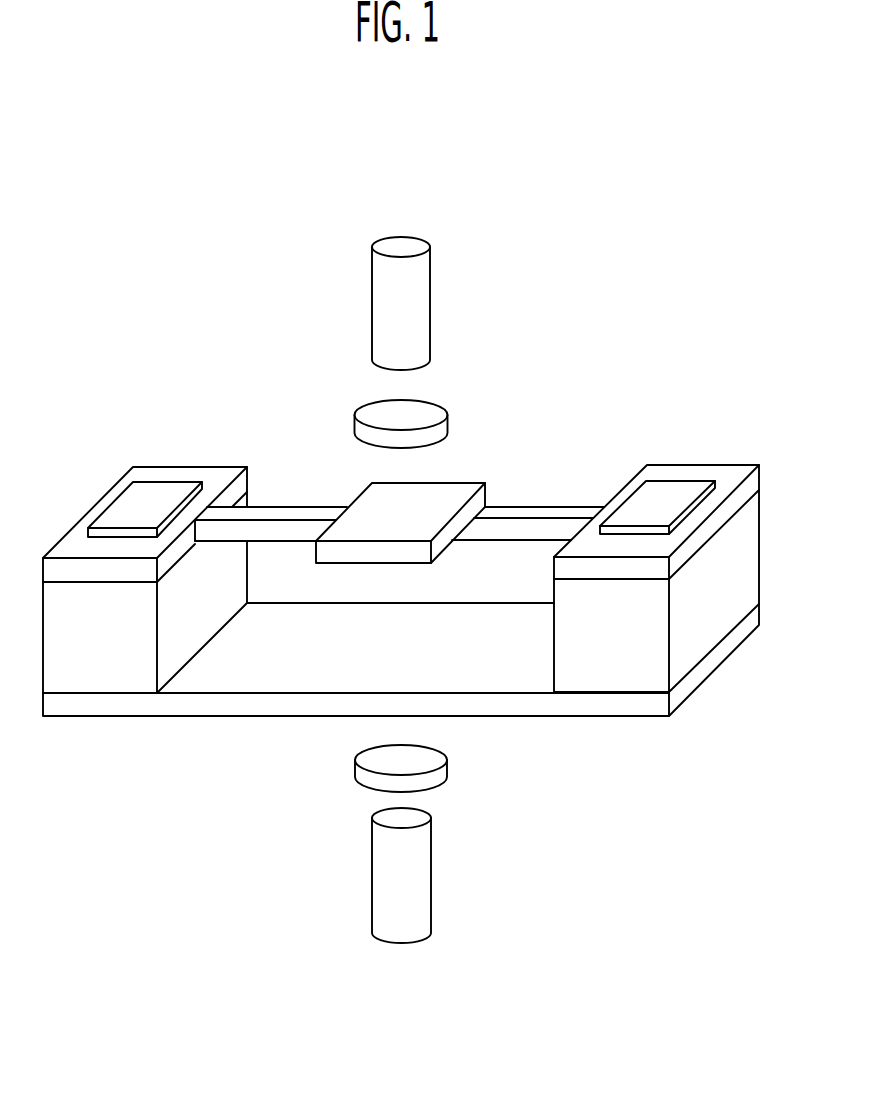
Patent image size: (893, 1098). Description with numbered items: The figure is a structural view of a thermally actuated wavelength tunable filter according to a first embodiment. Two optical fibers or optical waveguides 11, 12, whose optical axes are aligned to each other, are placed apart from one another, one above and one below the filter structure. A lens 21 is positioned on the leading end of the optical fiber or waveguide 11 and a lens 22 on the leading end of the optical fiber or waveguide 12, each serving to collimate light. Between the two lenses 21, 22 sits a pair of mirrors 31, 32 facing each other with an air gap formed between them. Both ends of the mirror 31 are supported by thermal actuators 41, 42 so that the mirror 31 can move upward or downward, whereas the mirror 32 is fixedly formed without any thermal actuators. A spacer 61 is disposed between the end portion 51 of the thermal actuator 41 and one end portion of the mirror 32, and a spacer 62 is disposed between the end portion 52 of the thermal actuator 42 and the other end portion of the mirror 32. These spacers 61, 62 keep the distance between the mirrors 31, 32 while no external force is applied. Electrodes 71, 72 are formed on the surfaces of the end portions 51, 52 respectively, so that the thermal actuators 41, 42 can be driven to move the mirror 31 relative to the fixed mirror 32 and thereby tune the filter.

The optical fiber or optical waveguide 11 is at (422, 318).
The optical fiber or optical waveguide 12 is at (422, 868).
The lens 21 is at (430, 410).
The lens 22 is at (447, 767).
The mirror 31 is at (453, 495).
The mirror 32 is at (188, 705).
The thermal actuator 41 is at (295, 512).
The thermal actuator 42 is at (540, 508).
The end portion of the thermal actuator 51 is at (218, 478).
The end portion of the thermal actuator 52 is at (730, 473).
The spacer 61 is at (93, 677).
The spacer 62 is at (743, 568).
The electrode 71 is at (133, 497).
The electrode 72 is at (670, 492).